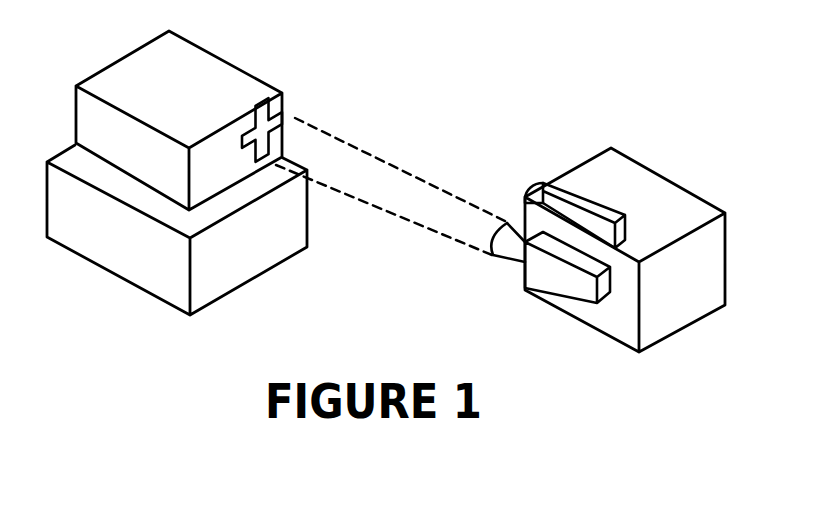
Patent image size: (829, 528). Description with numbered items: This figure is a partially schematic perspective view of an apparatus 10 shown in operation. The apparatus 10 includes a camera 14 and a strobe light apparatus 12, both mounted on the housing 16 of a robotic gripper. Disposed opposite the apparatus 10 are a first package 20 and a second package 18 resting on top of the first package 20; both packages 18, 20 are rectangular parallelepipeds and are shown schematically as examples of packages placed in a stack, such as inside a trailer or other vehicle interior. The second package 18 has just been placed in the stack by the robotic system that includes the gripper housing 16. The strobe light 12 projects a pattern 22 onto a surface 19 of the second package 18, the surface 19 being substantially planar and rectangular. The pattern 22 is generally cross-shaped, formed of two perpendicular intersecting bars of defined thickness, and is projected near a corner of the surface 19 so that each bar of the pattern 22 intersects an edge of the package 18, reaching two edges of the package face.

The apparatus 10 is at (599, 237).
The strobe light apparatus 12 is at (525, 261).
The camera 14 is at (565, 179).
The housing 16 is at (667, 338).
The second package 18 is at (207, 105).
The surface 19 is at (275, 141).
The first package 20 is at (98, 265).
The pattern 22 is at (277, 117).